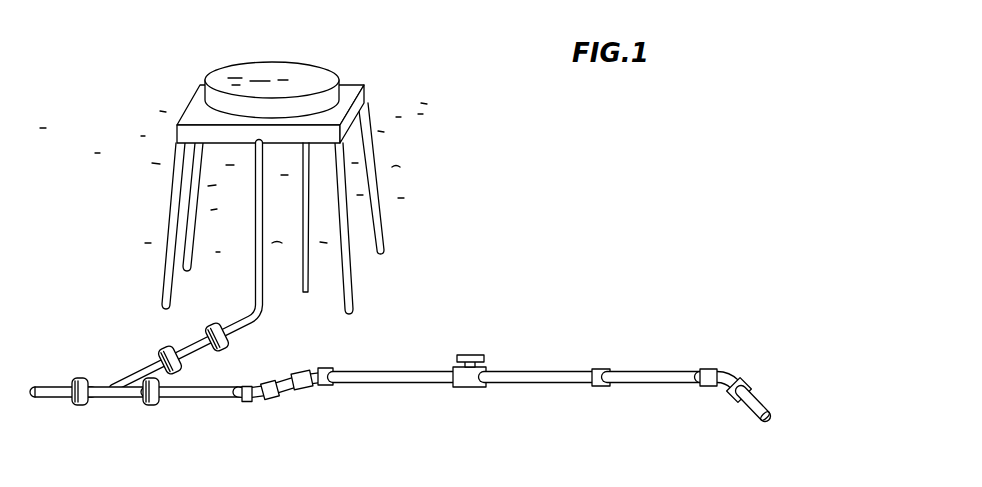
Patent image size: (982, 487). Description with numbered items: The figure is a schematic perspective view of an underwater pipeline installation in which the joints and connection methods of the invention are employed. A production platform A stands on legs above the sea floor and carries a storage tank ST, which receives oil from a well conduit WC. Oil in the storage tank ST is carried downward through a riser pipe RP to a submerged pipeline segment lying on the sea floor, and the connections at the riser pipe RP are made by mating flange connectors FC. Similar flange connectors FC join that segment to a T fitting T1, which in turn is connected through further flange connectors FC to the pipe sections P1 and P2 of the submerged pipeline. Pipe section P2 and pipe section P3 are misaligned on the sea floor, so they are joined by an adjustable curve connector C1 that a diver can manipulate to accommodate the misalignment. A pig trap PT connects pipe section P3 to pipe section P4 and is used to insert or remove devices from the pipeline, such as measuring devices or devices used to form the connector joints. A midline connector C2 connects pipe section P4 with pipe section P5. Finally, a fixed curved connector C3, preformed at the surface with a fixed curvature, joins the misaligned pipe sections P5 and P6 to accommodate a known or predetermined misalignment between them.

The storage tank ST is at (297, 72).
The production platform A is at (352, 90).
The well conduit WC is at (308, 193).
The riser pipe RP is at (256, 285).
The flange connectors FC is at (80, 378).
The pipe section P1 is at (50, 398).
The T fitting T1 is at (117, 398).
The pipe section P2 is at (223, 400).
The adjustable curve connector C1 is at (332, 390).
The pipe section P3 is at (412, 383).
The pig trap PT is at (478, 388).
The pipe section P4 is at (555, 385).
The midline connector C2 is at (602, 387).
The pipe section P5 is at (663, 373).
The fixed curved connector C3 is at (732, 412).
The pipe section P6 is at (762, 402).